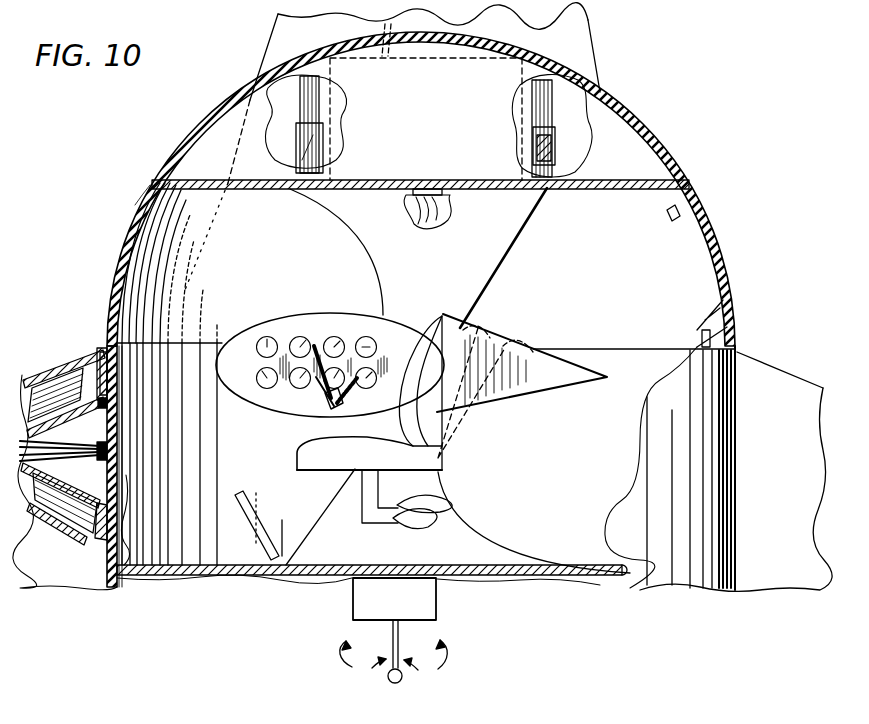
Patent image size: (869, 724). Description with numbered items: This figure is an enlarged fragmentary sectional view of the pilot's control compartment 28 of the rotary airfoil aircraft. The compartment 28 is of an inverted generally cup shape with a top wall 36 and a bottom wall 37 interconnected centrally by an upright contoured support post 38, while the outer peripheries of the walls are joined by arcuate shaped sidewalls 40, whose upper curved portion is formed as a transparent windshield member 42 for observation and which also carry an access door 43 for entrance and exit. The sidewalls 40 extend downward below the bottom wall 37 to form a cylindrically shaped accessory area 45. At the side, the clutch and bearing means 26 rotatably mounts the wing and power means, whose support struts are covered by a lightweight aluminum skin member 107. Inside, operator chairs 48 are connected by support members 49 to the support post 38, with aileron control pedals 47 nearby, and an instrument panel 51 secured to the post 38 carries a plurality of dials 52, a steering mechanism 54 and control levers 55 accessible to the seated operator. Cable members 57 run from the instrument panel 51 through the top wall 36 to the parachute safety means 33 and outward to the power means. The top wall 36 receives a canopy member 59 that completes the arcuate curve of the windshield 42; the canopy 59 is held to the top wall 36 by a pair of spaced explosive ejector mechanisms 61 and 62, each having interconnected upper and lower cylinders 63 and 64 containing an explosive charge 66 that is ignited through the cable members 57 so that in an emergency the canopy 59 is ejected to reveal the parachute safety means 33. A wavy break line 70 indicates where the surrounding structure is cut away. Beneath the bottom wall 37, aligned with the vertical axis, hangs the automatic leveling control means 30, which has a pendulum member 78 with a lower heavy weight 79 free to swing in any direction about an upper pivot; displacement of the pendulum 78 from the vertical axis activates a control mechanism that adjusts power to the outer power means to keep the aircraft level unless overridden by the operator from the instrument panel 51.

The clutch and bearing means 26 is at (42, 378).
The pilot's control compartment 28 is at (237, 245).
The automatic leveling control means 30 is at (372, 600).
The parachute safety means 33 is at (215, 162).
The top wall 36 is at (203, 189).
The bottom wall 37 is at (165, 576).
The upright contoured support post 38 is at (468, 279).
The arcuate shaped sidewalls 40 is at (422, 433).
The transparent windshield member 42 is at (146, 201).
The access door 43 is at (692, 228).
The cylindrically shaped accessory area 45 is at (606, 586).
The aileron control pedals 47 is at (271, 558).
The operator chairs 48 is at (438, 458).
The support members 49 is at (395, 514).
The instrument panel 51 is at (330, 354).
The dials 52 is at (278, 337).
The steering mechanism 54 is at (313, 340).
The control levers 55 is at (443, 316).
The cable members 57 is at (420, 226).
The canopy member 59 is at (249, 98).
The explosive ejector mechanism 61 is at (323, 98).
The explosive ejector mechanism 62 is at (586, 126).
The upper cylinder 63 is at (305, 92).
The lower cylinder 64 is at (324, 163).
The explosive charge 66 is at (556, 147).
The hatch cover 70 is at (373, 24).
The pendulum member 78 is at (394, 636).
The lower heavy weight 79 is at (398, 683).
The skin member 107 is at (80, 366).